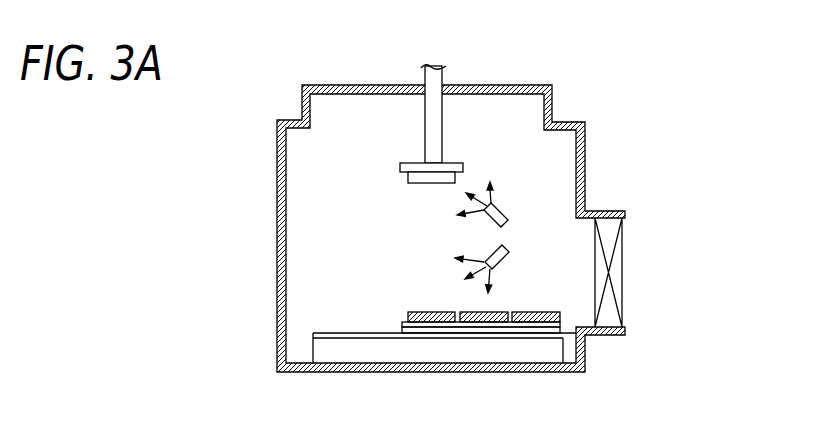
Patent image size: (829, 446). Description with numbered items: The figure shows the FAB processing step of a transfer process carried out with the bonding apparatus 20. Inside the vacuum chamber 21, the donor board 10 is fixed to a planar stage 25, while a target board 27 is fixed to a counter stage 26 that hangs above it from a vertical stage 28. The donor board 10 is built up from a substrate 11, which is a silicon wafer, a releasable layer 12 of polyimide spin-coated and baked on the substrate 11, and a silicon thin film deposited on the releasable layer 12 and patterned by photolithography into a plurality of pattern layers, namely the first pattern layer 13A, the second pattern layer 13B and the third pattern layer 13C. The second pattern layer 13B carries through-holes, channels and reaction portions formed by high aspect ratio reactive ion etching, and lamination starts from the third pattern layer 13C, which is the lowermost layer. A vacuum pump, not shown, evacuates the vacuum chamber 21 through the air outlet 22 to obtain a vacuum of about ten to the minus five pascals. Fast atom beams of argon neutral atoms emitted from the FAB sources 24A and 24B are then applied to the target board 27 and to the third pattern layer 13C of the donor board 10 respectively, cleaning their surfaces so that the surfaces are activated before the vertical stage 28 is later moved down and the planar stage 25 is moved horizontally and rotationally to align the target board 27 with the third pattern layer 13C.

The bonding apparatus 20 is at (648, 57).
The vacuum chamber 21 is at (587, 148).
The air outlet 22 is at (622, 252).
The FAB source 24A is at (500, 207).
The FAB source 24B is at (508, 248).
The planar stage 25 is at (538, 355).
The counter stage 26 is at (400, 165).
The target board 27 is at (410, 180).
The vertical stage 28 is at (423, 110).
The donor board 10 is at (525, 320).
The substrate 11 is at (585, 338).
The releasable layer 12 is at (553, 324).
The first pattern layer 13A is at (556, 318).
The second pattern layer 13B is at (491, 310).
The third pattern layer 13C is at (407, 316).